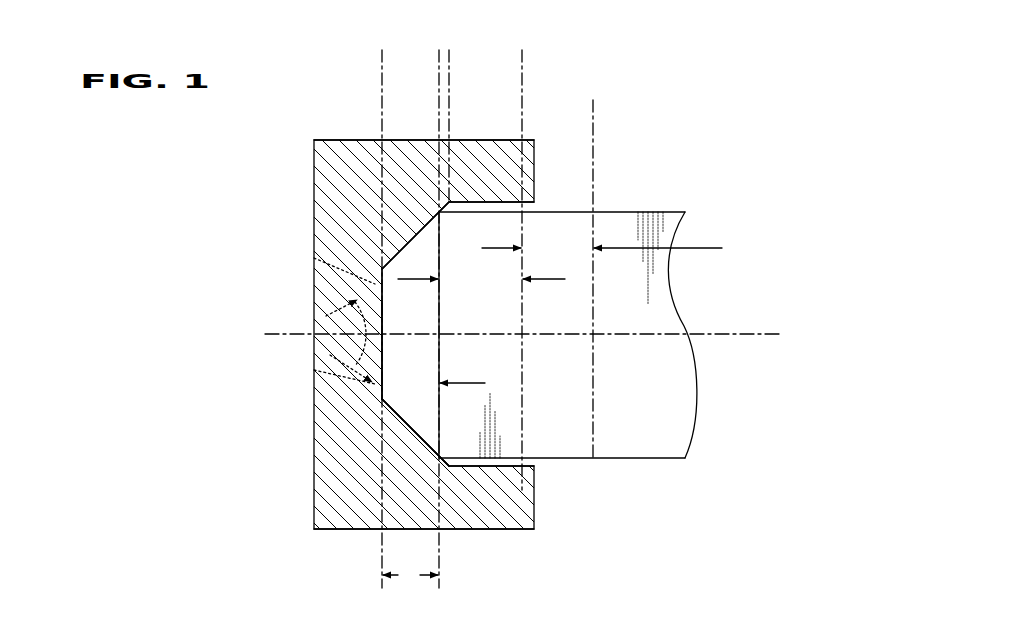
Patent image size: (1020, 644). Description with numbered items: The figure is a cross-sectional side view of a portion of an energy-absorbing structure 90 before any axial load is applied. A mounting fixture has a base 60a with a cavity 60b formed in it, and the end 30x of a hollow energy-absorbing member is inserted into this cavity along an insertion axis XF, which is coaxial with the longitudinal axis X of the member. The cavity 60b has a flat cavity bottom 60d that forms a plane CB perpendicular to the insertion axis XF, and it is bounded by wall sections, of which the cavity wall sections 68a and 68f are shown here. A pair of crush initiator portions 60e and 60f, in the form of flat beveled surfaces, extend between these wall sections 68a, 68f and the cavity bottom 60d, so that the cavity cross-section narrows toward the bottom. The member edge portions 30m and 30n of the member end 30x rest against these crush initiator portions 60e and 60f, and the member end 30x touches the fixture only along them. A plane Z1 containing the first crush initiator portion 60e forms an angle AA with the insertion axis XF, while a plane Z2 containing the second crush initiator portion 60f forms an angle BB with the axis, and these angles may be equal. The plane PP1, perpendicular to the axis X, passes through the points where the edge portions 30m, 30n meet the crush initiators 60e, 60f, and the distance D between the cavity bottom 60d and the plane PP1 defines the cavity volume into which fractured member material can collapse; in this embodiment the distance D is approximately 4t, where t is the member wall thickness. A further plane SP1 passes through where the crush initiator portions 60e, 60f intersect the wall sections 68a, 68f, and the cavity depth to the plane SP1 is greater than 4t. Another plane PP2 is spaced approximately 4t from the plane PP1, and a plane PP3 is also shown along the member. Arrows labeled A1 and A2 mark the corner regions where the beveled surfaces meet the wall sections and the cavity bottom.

The energy-absorbing structure 90 is at (172, 184).
The longitudinal axis of member X is at (568, 335).
The insertion axis XF is at (723, 336).
The cavity bottom plane CB is at (382, 66).
The plane PP1 is at (437, 66).
The plane SP1 is at (449, 66).
The plane PP2 is at (522, 100).
The third reference plane PP3 is at (593, 162).
The member edge portion 30m is at (443, 203).
The member edge portion 30n is at (382, 530).
The member end 30x is at (440, 384).
The crush initiator portion 60e is at (425, 226).
The crush initiator portion 60f is at (440, 456).
The cavity bottom 60d is at (382, 378).
The base 60a is at (342, 489).
The cavity 60b is at (441, 459).
The cavity wall section 68a is at (495, 202).
The cavity wall section 68f is at (490, 467).
The first corner angle A1 is at (443, 205).
The second corner angle A2 is at (383, 268).
The plane Z1 is at (314, 258).
The plane Z2 is at (314, 370).
The angle AA is at (357, 320).
The angle BB is at (355, 356).
The distance of four wall thicknesses 4t is at (573, 315).
The distance D is at (410, 575).